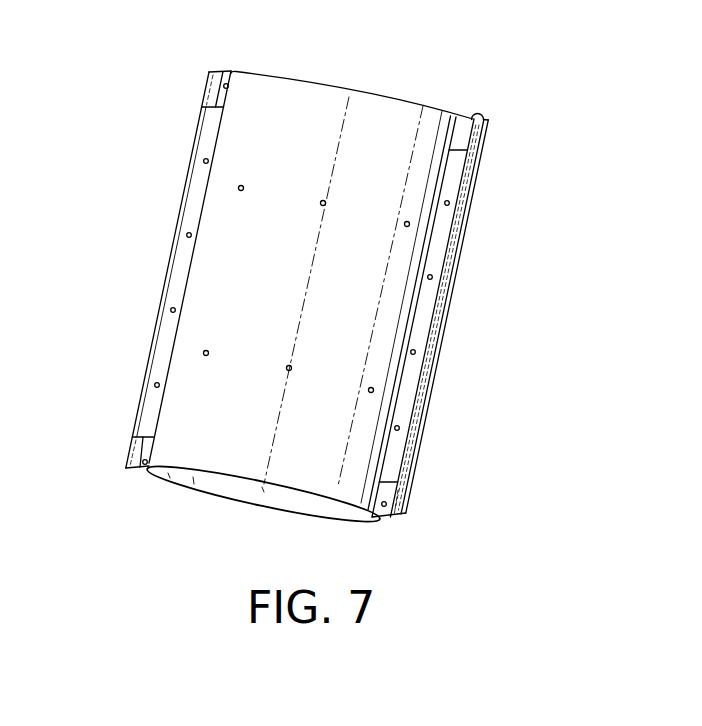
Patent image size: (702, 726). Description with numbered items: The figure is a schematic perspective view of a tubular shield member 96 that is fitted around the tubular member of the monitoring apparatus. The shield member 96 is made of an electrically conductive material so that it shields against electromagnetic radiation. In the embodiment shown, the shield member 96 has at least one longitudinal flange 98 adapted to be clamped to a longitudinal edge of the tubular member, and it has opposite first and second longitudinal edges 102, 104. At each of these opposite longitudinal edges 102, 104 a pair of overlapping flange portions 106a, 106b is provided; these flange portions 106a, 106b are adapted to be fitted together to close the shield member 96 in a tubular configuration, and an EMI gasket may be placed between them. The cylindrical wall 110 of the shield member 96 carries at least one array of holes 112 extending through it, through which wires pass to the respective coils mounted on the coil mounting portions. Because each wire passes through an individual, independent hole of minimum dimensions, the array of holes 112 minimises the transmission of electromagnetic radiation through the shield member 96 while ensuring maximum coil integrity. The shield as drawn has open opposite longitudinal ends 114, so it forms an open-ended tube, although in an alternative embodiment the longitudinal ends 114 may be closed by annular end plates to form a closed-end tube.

The shield member 96 is at (303, 138).
The longitudinal flange 98 is at (200, 153).
The first longitudinal edge 102 is at (152, 397).
The second longitudinal edge 104 is at (391, 463).
The overlapping flange portion 106a is at (445, 215).
The overlapping flange portion 106b is at (388, 497).
The cylindrical wall 110 is at (350, 120).
The array of holes 112 is at (322, 203).
The open opposite longitudinal ends 114 is at (252, 492).